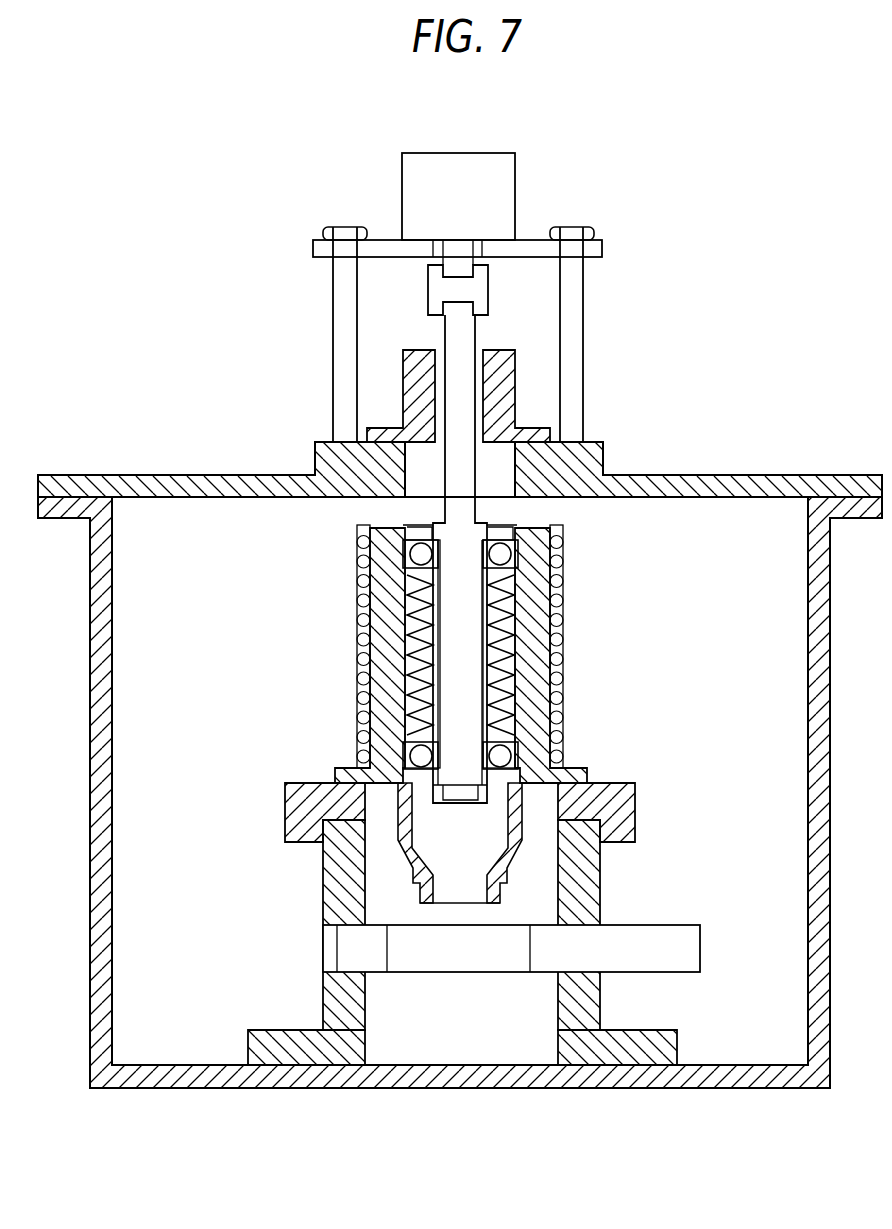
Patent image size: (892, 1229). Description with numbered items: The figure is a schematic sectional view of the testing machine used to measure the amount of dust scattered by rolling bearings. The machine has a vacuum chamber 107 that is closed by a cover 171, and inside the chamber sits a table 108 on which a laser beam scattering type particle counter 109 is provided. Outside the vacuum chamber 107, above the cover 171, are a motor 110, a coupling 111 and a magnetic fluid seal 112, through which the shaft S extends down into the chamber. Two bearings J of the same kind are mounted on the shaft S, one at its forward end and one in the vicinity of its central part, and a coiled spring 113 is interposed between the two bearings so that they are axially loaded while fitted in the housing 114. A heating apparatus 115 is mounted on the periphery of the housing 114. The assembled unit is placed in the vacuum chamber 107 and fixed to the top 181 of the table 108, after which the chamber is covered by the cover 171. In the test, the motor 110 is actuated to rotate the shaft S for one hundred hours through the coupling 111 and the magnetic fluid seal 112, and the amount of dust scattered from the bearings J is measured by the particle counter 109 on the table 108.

The vacuum chamber 107 is at (827, 603).
The cover 171 is at (778, 475).
The motor 110 is at (505, 175).
The coupling 111 is at (480, 288).
The magnetic fluid seal 112 is at (507, 397).
The shaft S is at (443, 652).
The housing 114 is at (380, 707).
The heating apparatus 115 is at (363, 580).
The bearings J is at (500, 554).
The spring 113 is at (490, 637).
The top of the table 181 is at (630, 802).
The table 108 is at (593, 877).
The laser beam scattering type particle counter 109 is at (693, 945).